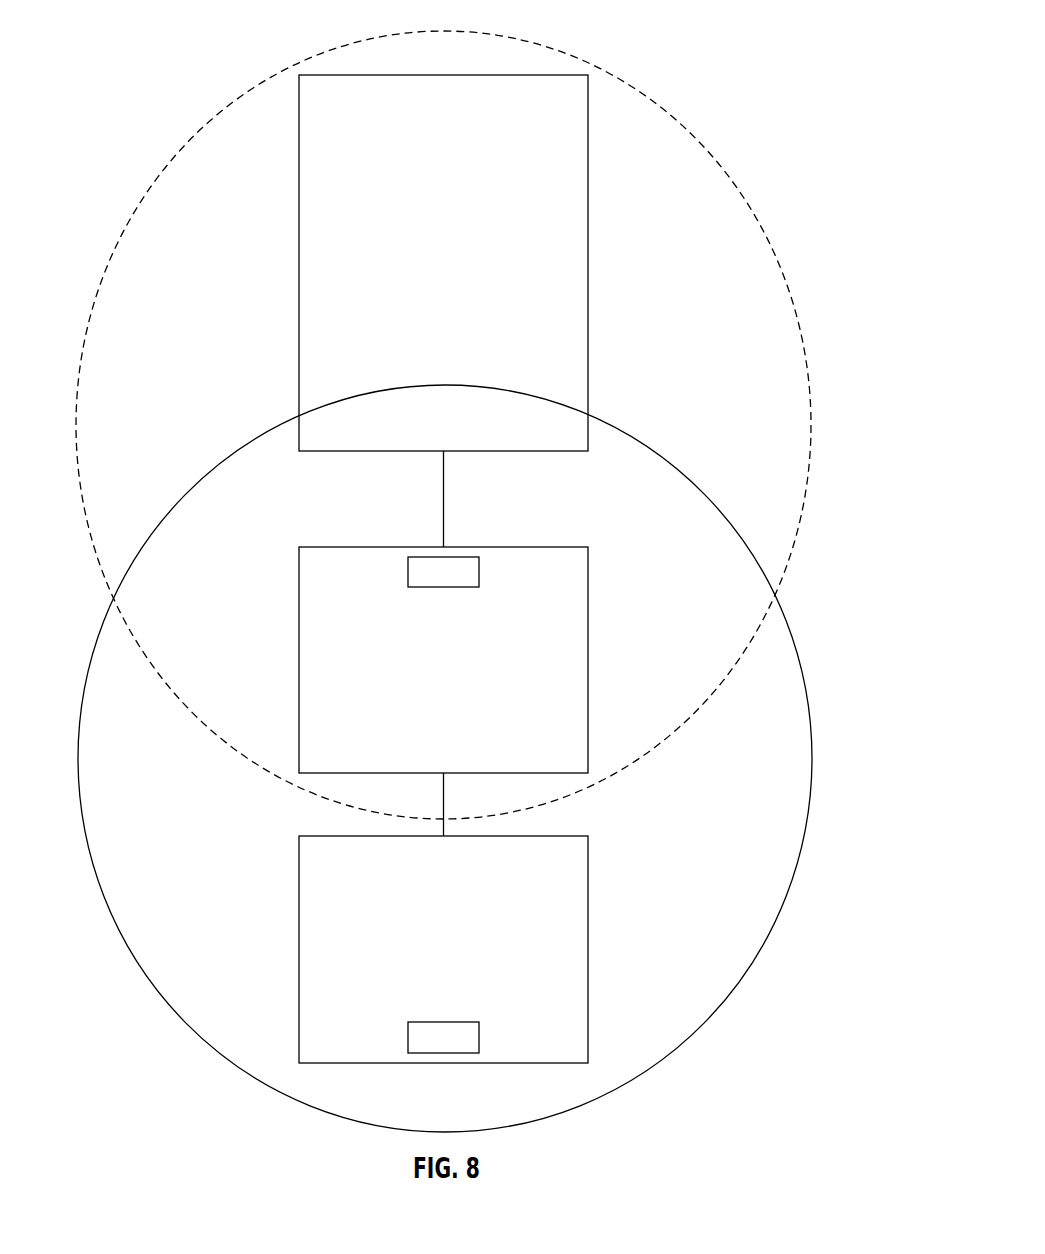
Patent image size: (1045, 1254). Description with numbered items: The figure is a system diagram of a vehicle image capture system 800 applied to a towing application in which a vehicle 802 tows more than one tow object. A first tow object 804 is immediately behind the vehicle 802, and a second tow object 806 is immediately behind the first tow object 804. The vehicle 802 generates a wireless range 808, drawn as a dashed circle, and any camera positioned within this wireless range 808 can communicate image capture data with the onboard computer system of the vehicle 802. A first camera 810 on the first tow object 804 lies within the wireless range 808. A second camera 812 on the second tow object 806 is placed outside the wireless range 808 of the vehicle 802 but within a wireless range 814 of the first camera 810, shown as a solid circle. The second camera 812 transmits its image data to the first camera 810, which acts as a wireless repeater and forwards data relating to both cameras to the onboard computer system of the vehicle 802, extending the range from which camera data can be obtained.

The vehicle image capture system 800 is at (762, 21).
The vehicle 802 is at (299, 262).
The first tow object 804 is at (299, 660).
The second tow object 806 is at (588, 950).
The wireless range 808 is at (688, 126).
The first camera 810 is at (479, 572).
The second camera 812 is at (408, 1037).
The wireless range of first camera 814 is at (670, 1052).